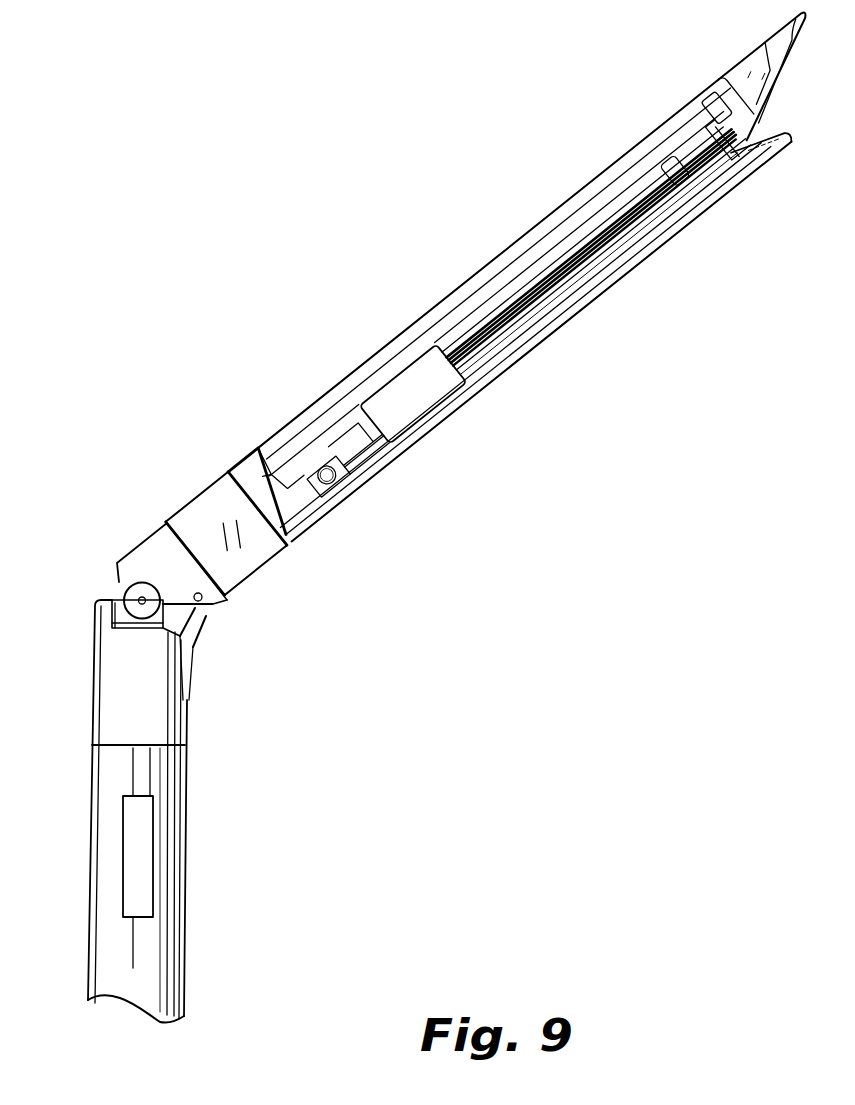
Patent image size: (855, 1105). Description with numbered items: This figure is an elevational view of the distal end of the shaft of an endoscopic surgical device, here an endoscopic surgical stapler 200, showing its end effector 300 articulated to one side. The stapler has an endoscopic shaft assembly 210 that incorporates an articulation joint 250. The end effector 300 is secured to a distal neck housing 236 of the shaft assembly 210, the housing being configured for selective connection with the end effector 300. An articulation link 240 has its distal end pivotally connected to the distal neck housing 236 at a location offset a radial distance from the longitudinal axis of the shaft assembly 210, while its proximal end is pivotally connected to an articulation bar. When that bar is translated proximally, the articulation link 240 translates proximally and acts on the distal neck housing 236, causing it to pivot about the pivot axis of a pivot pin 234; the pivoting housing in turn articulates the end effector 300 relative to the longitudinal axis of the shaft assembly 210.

The endoscopic surgical stapler 200 is at (150, 336).
The endoscopic shaft assembly 210 is at (72, 714).
The pivot pin 234 is at (140, 590).
The distal neck housing 236 is at (155, 565).
The articulation link 240 is at (199, 644).
The articulation joint 250 is at (92, 582).
The end effector 300 is at (289, 410).